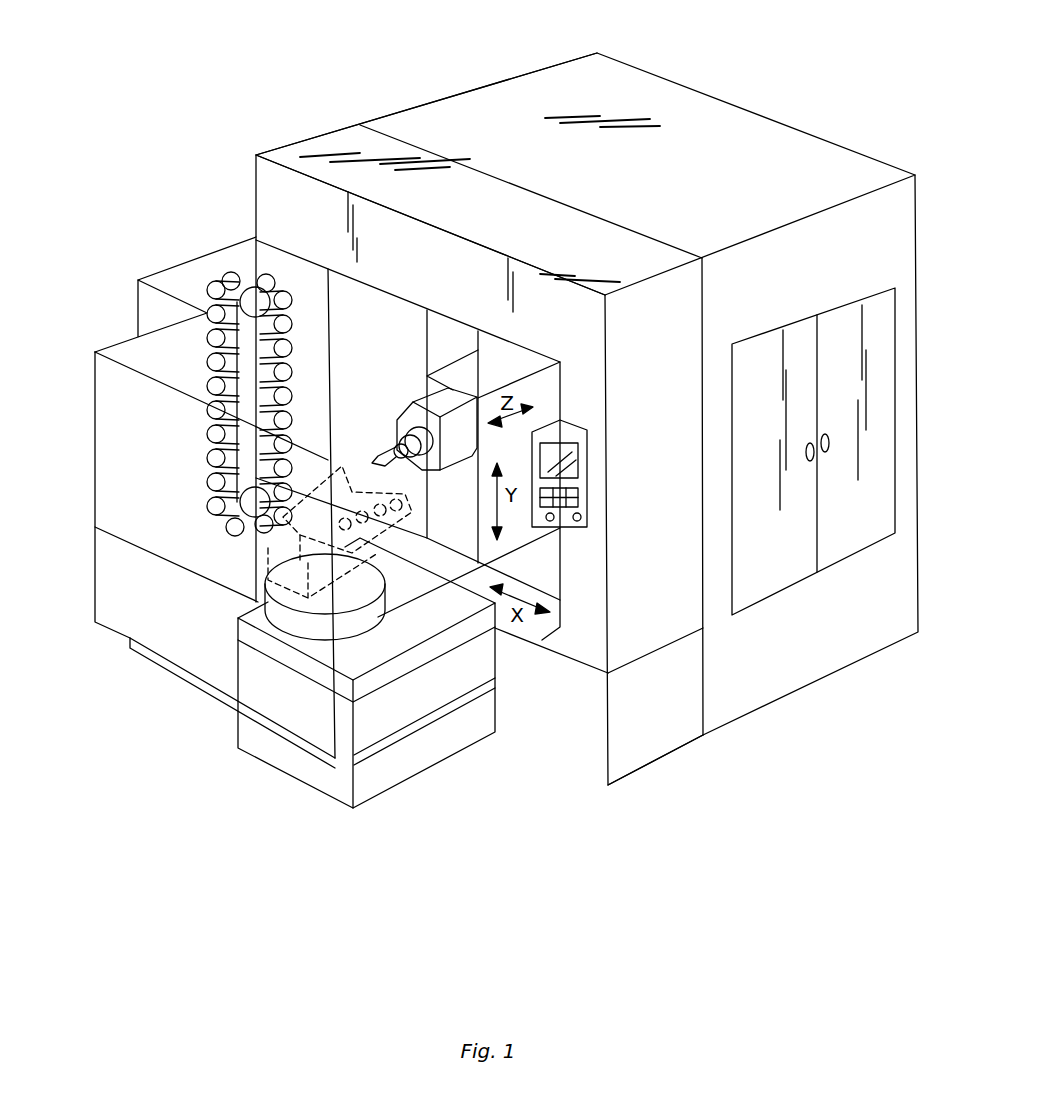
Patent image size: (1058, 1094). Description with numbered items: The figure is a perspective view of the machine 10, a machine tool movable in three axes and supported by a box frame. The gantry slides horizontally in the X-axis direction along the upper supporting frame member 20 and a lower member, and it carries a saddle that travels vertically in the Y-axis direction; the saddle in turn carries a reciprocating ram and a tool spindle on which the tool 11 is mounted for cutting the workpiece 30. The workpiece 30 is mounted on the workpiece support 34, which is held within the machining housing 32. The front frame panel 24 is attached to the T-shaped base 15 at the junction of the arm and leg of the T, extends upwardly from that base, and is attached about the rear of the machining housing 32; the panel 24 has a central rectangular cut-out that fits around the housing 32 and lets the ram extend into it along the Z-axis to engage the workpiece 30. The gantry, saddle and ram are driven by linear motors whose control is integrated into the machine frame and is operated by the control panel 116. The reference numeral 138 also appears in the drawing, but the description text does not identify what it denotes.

The machine 10 is at (238, 117).
The tool 11 is at (393, 458).
The T-shaped base 15 is at (562, 740).
The upper supporting frame member 20 is at (333, 142).
The front frame panel 24 is at (590, 637).
The workpiece 30 is at (283, 547).
The machining housing 32 is at (143, 265).
The workpiece support 34 is at (250, 633).
The control panel 116 is at (560, 420).
The tool chain 138 is at (345, 320).